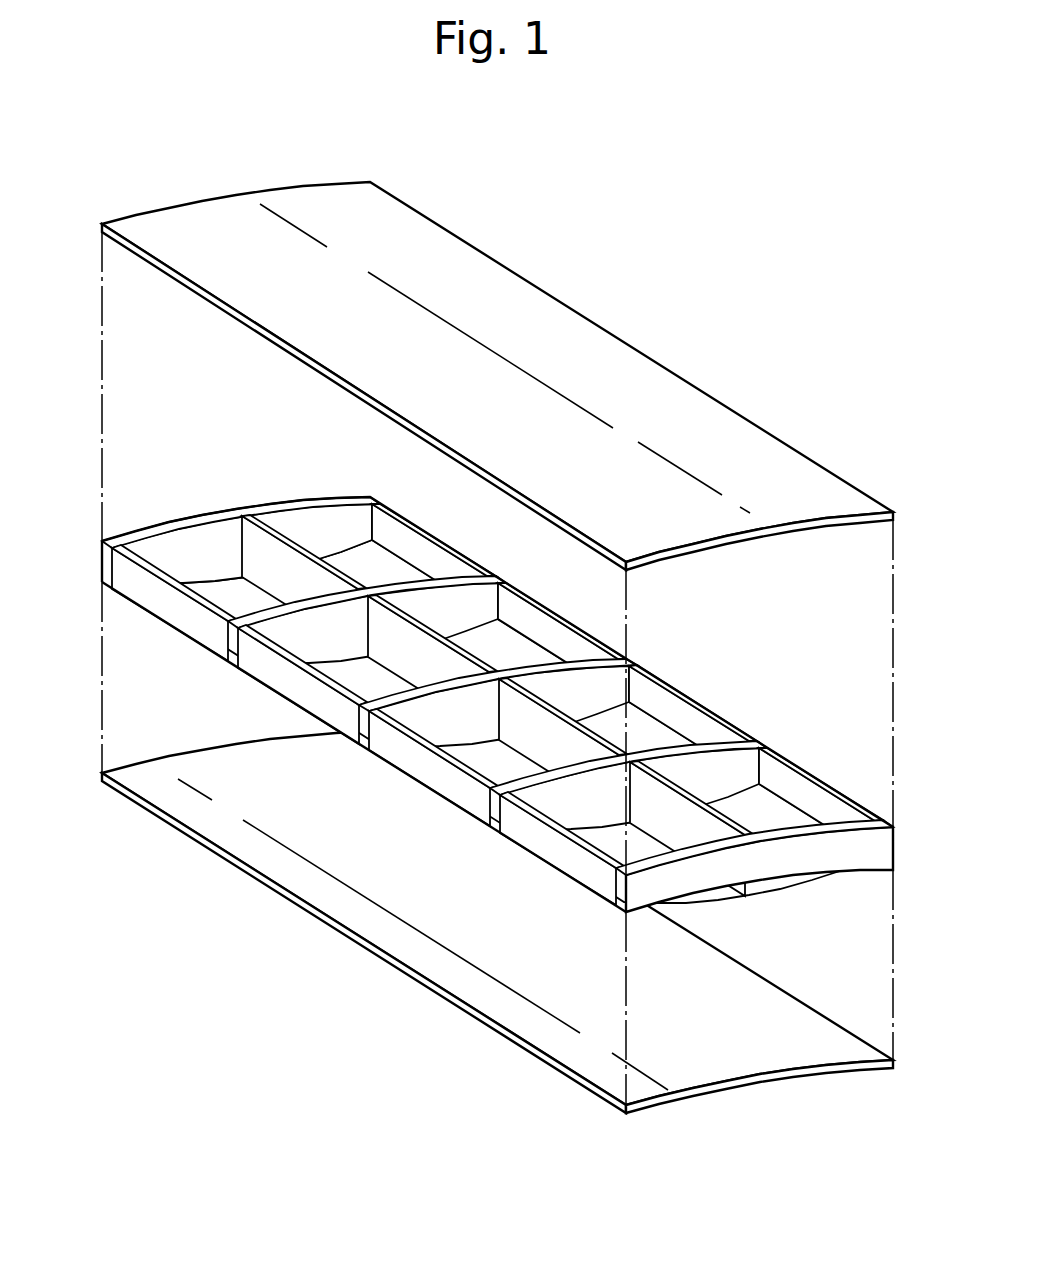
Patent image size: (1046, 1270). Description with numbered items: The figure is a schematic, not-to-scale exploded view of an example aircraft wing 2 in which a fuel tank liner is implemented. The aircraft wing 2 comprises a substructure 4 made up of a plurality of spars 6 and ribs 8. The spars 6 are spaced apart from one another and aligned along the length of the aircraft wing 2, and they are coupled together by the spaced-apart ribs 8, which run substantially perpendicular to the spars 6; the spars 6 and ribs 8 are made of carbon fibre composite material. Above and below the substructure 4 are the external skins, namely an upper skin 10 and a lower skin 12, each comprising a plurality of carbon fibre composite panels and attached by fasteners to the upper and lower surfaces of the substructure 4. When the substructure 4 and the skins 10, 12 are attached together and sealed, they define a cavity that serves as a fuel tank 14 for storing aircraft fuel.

The aircraft wing 2 is at (548, 198).
The substructure 4 is at (498, 666).
The spars 6 is at (466, 678).
The ribs 8 is at (306, 522).
The upper skin 10 is at (627, 380).
The lower skin 12 is at (440, 975).
The fuel tank 14 is at (504, 657).